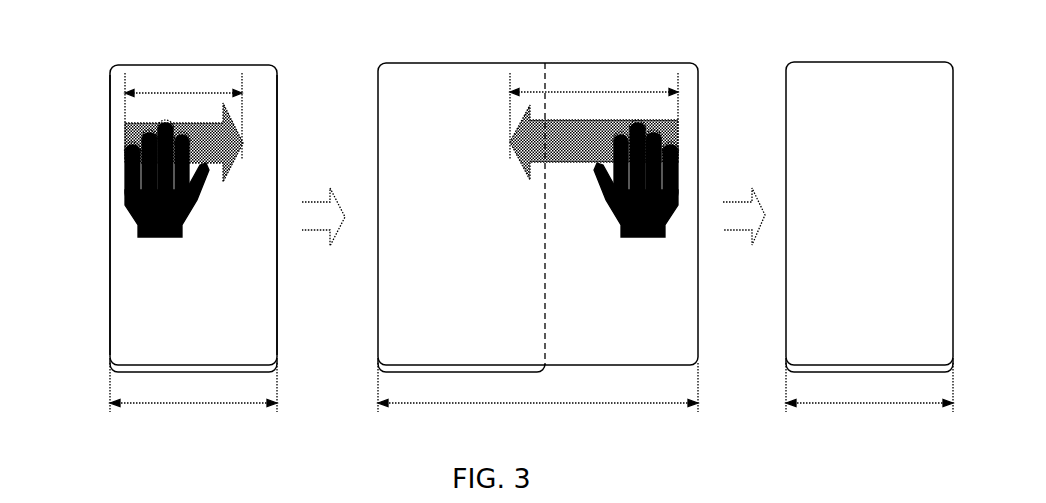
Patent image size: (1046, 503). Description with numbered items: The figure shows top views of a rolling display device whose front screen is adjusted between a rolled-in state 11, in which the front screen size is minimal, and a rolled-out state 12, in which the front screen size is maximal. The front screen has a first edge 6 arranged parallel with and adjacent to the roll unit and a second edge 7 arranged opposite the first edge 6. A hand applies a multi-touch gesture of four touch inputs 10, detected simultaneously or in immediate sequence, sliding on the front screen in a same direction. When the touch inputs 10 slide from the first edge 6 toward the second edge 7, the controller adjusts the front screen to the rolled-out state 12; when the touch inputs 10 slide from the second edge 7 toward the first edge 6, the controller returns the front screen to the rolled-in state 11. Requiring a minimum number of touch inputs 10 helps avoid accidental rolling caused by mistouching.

The rolled-in state 11 is at (103, 46).
The rolled-out state 12 is at (372, 46).
The first edge 6 is at (110, 263).
The second edge 7 is at (277, 117).
The touch inputs 10 is at (179, 136).